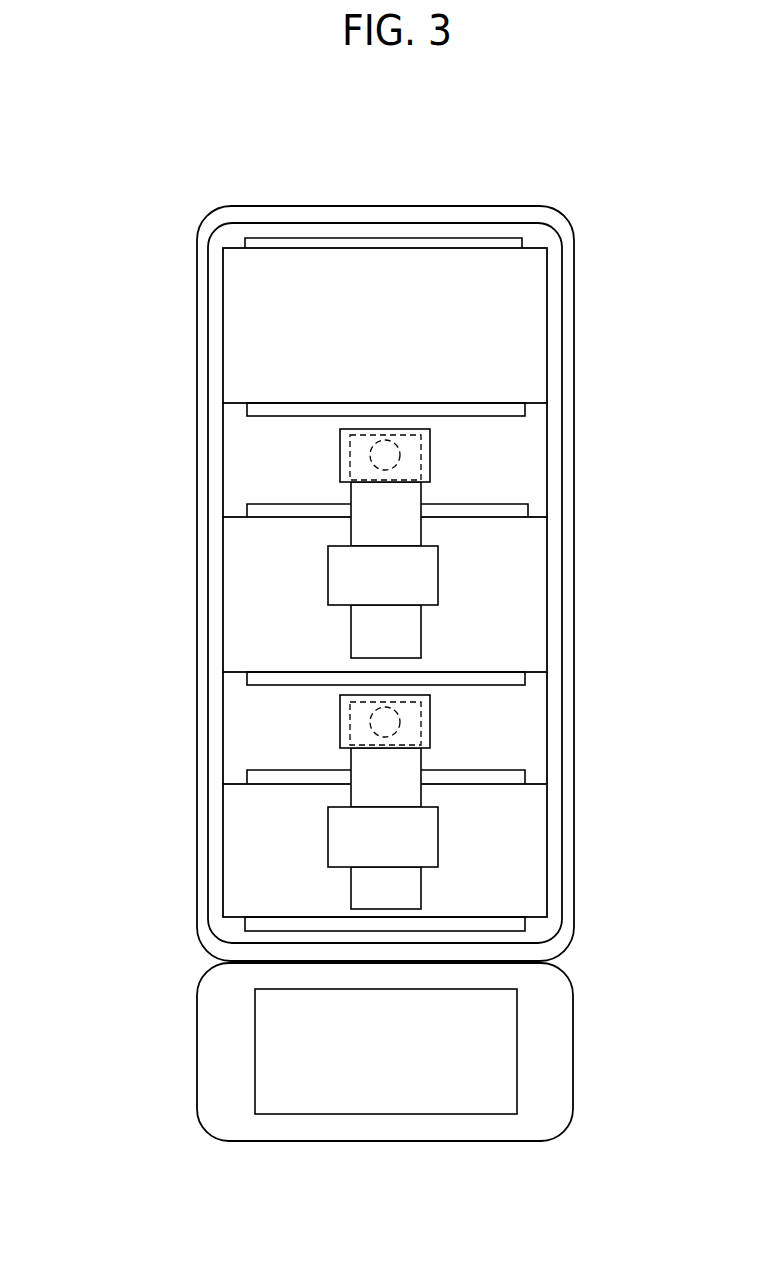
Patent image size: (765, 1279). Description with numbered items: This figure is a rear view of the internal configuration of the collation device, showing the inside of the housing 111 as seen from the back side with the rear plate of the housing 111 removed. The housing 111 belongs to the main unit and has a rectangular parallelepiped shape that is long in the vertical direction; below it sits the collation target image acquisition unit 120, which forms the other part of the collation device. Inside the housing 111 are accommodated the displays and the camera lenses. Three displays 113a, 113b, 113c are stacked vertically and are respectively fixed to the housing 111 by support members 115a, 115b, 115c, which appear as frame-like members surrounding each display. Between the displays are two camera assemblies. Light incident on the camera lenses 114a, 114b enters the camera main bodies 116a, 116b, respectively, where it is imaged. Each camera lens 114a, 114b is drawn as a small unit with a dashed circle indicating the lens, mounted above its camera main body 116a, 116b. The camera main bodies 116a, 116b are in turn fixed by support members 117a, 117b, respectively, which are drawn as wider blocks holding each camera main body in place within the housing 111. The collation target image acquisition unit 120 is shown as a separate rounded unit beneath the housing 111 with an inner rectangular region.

The housing 111 is at (465, 207).
The display 113a is at (522, 239).
The display 113b is at (528, 508).
The display 113c is at (525, 776).
The camera lens 114a is at (386, 455).
The camera lens 114b is at (386, 722).
The support member 115a is at (522, 315).
The support member 115b is at (522, 565).
The support member 115c is at (525, 850).
The camera main body 116a is at (372, 495).
The camera main body 116b is at (373, 764).
The support member 117a is at (370, 575).
The support member 117b is at (370, 843).
The collation target image acquisition unit 120 is at (573, 1052).